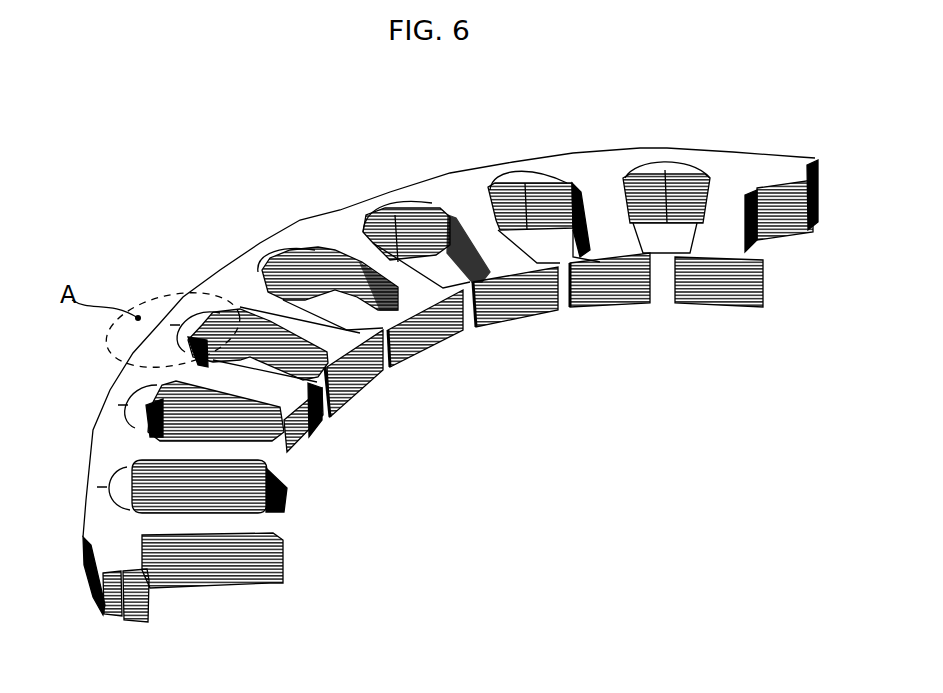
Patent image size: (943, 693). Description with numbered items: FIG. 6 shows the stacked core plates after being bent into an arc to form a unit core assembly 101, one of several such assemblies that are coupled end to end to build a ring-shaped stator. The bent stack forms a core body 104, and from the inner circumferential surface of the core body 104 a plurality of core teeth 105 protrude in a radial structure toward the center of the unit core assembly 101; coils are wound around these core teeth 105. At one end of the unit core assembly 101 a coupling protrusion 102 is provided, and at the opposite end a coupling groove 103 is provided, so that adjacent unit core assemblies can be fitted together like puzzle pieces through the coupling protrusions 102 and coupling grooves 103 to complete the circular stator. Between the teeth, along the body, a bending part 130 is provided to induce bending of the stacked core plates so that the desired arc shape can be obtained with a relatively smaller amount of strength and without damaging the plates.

The unit core assembly 101 is at (263, 129).
The coupling protrusion 102 is at (153, 590).
The coupling groove 103 is at (808, 170).
The core body 104 is at (680, 203).
The core teeth 105 is at (712, 288).
The bending part 130 is at (178, 300).